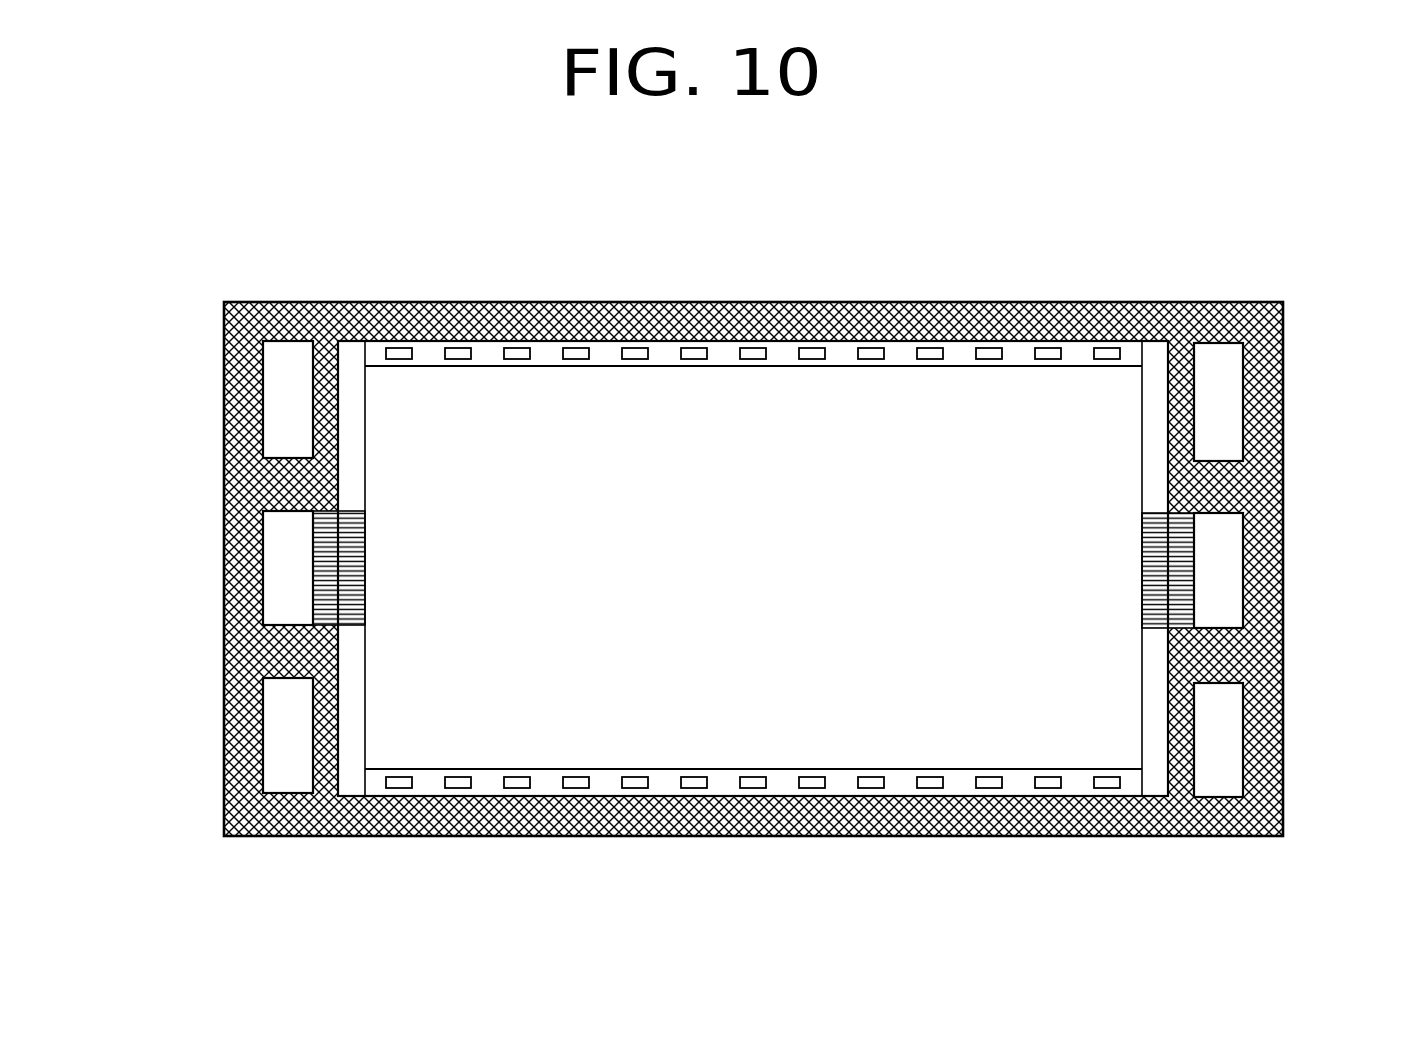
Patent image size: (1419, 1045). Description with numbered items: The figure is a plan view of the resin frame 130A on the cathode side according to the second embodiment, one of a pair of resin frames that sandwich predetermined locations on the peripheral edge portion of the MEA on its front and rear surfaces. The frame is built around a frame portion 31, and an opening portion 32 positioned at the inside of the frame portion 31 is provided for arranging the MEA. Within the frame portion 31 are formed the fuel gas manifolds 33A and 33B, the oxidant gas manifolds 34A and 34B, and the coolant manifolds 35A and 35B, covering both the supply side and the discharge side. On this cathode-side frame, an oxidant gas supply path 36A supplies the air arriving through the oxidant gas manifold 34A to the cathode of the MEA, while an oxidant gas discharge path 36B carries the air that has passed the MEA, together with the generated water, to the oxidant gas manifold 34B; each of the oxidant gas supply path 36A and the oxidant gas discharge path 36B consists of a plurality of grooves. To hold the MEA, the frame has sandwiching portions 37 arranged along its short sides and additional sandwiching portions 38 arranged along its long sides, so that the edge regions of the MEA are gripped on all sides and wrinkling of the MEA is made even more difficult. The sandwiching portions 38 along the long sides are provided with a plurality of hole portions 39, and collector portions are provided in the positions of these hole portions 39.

The resin frame on the cathode side 130A is at (929, 292).
The frame portion 31 is at (853, 813).
The opening portion 32 is at (647, 750).
The fuel gas manifold 33A is at (280, 380).
The fuel gas manifold 33B is at (1222, 384).
The oxidant gas manifold 34A is at (280, 538).
The oxidant gas manifold 34B is at (1222, 547).
The coolant manifold 35A is at (280, 748).
The coolant manifold 35B is at (1222, 717).
The oxidant gas supply path 36A is at (323, 503).
The oxidant gas discharge path 36B is at (1182, 507).
The sandwiching portion 37 is at (357, 400).
The sandwiching portion 38 is at (488, 358).
The hole portion 39 is at (692, 348).